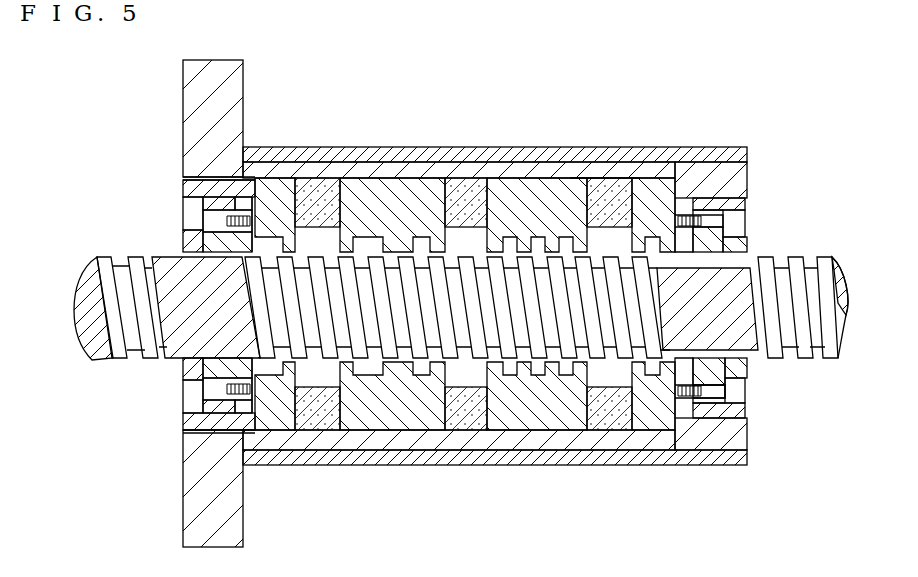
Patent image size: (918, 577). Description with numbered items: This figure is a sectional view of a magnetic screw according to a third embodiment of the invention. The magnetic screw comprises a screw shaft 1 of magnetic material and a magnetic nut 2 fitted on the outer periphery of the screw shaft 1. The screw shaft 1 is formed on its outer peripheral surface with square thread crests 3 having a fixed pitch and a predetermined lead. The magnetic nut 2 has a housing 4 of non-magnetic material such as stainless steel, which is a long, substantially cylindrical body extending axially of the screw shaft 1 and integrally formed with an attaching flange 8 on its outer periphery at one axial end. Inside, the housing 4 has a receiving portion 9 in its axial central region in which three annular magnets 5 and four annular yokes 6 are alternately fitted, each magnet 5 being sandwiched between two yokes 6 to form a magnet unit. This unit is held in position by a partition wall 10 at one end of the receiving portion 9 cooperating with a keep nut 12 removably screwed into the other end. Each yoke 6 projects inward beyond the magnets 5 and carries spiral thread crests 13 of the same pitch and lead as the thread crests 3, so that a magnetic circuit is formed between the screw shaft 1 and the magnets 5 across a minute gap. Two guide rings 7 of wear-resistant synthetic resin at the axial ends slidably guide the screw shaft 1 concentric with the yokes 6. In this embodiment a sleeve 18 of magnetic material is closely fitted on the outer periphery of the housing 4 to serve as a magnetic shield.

The screw shaft 1 is at (136, 250).
The magnetic nut 2 is at (489, 147).
The thread crests 3 is at (811, 360).
The housing 4 is at (352, 172).
The annular magnets 5 is at (306, 190).
The annular yokes 6 is at (275, 420).
The guide rings 7 is at (717, 198).
The attaching flange 8 is at (194, 84).
The receiving portion 9 is at (557, 418).
The partition wall 10 is at (688, 410).
The keep nut 12 is at (192, 185).
The thread crests 13 is at (548, 245).
The sleeve 18 is at (581, 171).